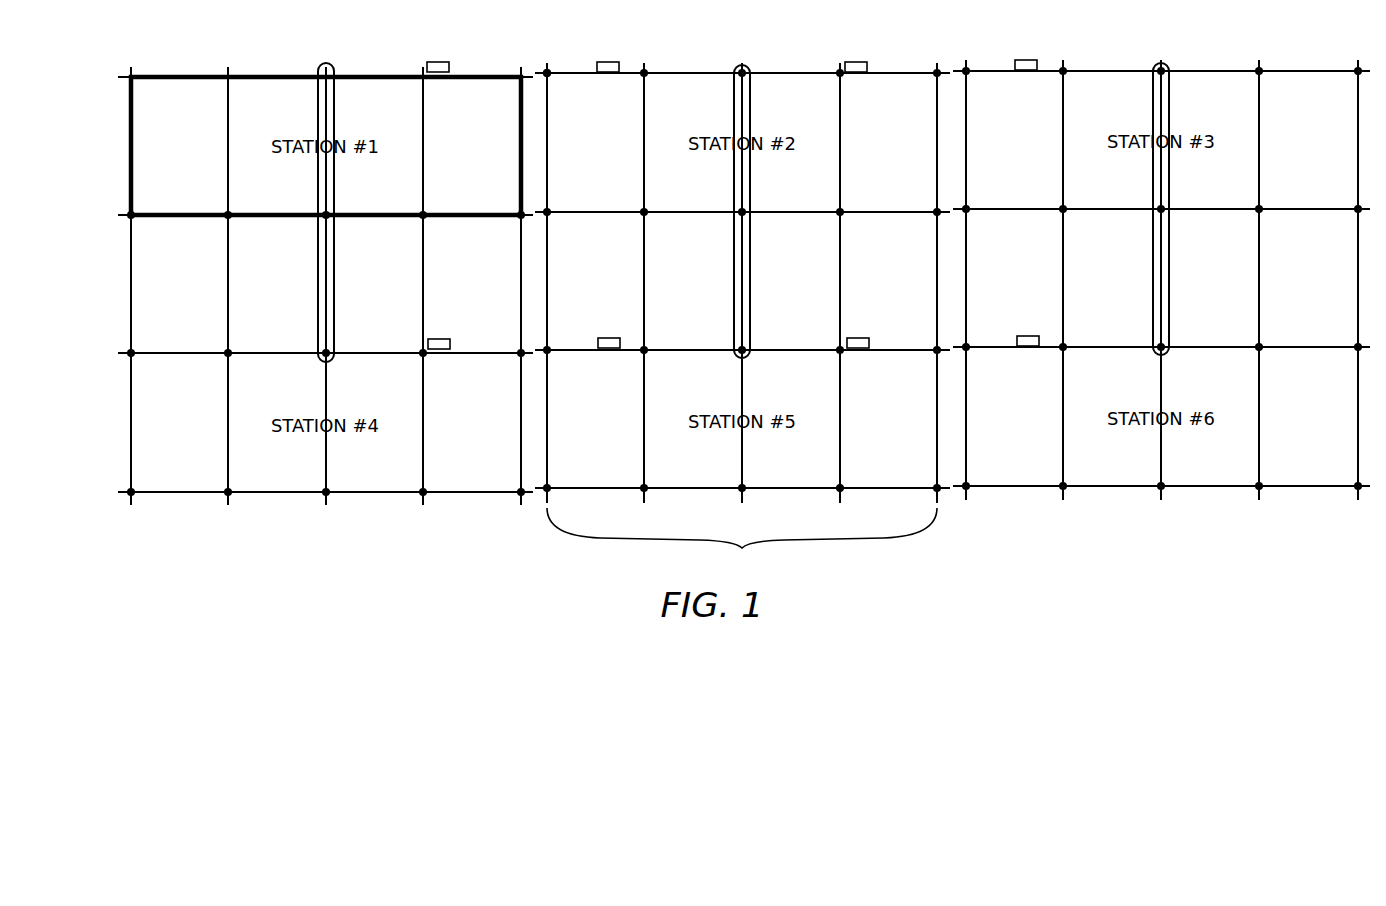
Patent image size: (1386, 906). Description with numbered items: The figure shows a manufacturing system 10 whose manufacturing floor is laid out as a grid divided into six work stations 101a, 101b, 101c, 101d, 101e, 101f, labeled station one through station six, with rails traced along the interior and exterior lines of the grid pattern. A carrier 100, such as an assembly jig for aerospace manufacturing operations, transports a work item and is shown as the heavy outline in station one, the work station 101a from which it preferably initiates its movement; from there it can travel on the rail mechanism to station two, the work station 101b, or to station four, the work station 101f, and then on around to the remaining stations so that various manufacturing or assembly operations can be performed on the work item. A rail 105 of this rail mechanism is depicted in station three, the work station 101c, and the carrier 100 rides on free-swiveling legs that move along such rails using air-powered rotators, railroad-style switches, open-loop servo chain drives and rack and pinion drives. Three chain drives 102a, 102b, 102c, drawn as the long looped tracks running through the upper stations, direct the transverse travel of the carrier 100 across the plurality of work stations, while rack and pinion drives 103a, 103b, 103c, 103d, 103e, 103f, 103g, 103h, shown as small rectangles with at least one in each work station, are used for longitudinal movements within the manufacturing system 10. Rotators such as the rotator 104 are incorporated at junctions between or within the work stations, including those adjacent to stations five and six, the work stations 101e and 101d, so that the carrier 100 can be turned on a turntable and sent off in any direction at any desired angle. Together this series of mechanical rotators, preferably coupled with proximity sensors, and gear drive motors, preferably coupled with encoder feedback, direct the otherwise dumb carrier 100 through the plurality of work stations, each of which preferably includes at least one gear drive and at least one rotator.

The manufacturing system 10 is at (742, 318).
The carrier 100 is at (178, 73).
The work station 101a is at (165, 147).
The work station 101b is at (692, 87).
The work station 101c is at (995, 84).
The work station 101d is at (1005, 462).
The work station 101e is at (580, 435).
The work station 101f is at (190, 475).
The chain drive 102a is at (747, 67).
The chain drive 102b is at (330, 68).
The chain drive 102c is at (1165, 63).
The rack and pinion drive 103a is at (440, 62).
The rack and pinion drive 103b is at (606, 62).
The rack and pinion drive 103c is at (856, 62).
The rack and pinion drive 103d is at (1026, 60).
The rack and pinion drive 103e is at (1032, 336).
The rack and pinion drive 103f is at (860, 337).
The rack and pinion drive 103g is at (611, 337).
The rack and pinion drive 103h is at (445, 338).
The rotator 104 is at (552, 72).
The rail 105 is at (1130, 68).